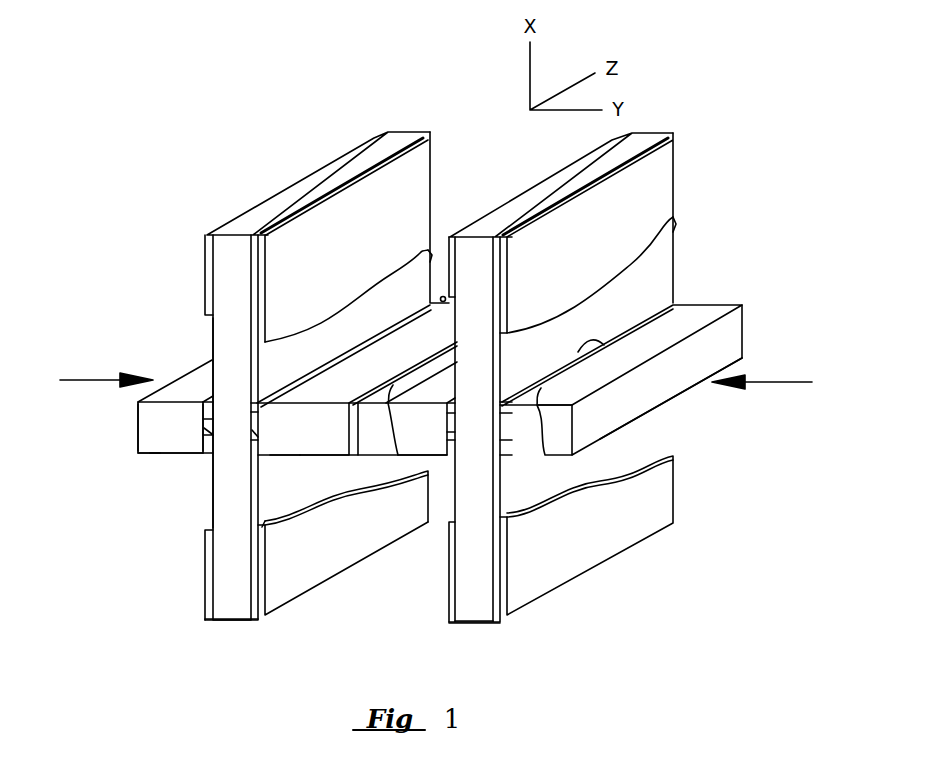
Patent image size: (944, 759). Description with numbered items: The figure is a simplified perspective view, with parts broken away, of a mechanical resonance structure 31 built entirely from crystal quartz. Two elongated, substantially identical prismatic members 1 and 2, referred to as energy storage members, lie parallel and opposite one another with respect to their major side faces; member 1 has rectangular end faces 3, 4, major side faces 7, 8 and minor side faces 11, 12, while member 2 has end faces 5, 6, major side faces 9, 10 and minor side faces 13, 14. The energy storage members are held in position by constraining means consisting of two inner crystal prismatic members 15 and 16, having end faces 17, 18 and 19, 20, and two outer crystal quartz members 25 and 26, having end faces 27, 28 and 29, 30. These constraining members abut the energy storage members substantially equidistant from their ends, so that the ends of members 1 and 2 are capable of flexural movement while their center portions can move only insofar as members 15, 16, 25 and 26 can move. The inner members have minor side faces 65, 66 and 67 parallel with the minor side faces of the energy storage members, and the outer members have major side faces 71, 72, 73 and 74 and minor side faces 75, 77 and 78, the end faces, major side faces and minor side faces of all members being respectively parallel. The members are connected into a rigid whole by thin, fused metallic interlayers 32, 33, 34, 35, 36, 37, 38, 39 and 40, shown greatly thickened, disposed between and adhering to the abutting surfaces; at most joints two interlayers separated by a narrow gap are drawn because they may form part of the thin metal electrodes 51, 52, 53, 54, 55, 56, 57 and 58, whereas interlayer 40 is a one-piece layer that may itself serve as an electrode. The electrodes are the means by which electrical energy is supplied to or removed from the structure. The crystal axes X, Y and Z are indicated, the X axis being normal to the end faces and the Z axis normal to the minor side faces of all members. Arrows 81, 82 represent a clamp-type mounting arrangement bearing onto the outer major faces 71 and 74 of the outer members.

The crystal quartz prismatic member 1 is at (228, 626).
The crystal quartz prismatic member 2 is at (457, 628).
The end face 3 is at (312, 196).
The end face 4 is at (238, 621).
The end face 5 is at (643, 133).
The end face 6 is at (498, 620).
The major side face 7 is at (360, 304).
The major side face 8 is at (213, 312).
The major side face 9 is at (607, 293).
The major side face 10 is at (448, 521).
The minor side face 11 is at (221, 566).
The minor side face 12 is at (430, 258).
The minor side face 13 is at (455, 600).
The minor side face 14 is at (671, 270).
The inner crystal prismatic member 15 is at (285, 460).
The inner crystal prismatic member 16 is at (431, 460).
The end face 17 is at (375, 358).
The end face 18 is at (335, 457).
The end face 19 is at (425, 383).
The end face 20 is at (407, 456).
The outer crystal quartz prismatic member 25 is at (156, 462).
The outer crystal quartz prismatic member 26 is at (551, 462).
The end face 27 is at (157, 394).
The end face 28 is at (147, 453).
The end face 29 is at (653, 343).
The end face 30 is at (672, 395).
The rigid symmetrical structure 31 is at (339, 600).
The metallic interlayer 32 is at (207, 400).
The metallic interlayer 33 is at (207, 454).
The metallic interlayer 34 is at (256, 401).
The metallic interlayer 35 is at (253, 456).
The metallic interlayer 36 is at (451, 405).
The metallic interlayer 37 is at (452, 457).
The metallic interlayer 38 is at (503, 400).
The metallic interlayer 39 is at (504, 456).
The metallic interlayer 40 is at (362, 430).
The electrode 51 is at (206, 262).
The electrode 52 is at (205, 560).
The electrode 53 is at (351, 217).
The electrode 54 is at (325, 548).
The electrode 55 is at (500, 208).
The electrode 56 is at (449, 565).
The electrode 57 is at (602, 207).
The electrode 58 is at (588, 537).
The minor side face 65 is at (290, 425).
The minor side face 66 is at (442, 301).
The minor side face 67 is at (395, 425).
The major side face 71 is at (138, 427).
The major side face 72 is at (203, 440).
The major side face 73 is at (596, 345).
The major side face 74 is at (610, 415).
The minor side face 75 is at (144, 425).
The minor side face 77 is at (547, 432).
The minor side face 78 is at (742, 320).
The arrow 81 is at (91, 377).
The arrow 82 is at (777, 382).